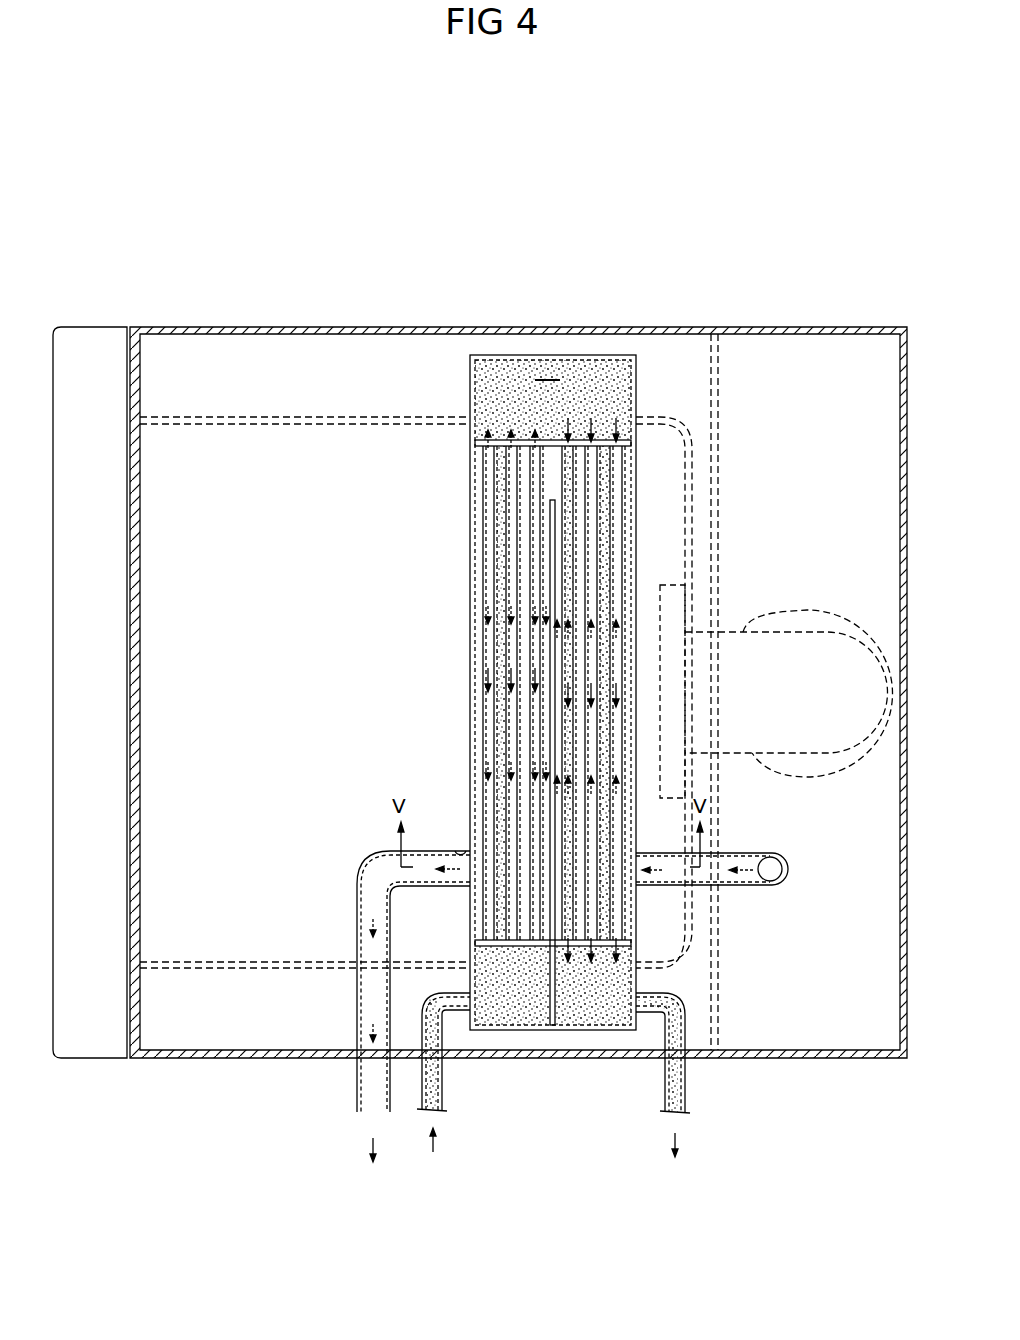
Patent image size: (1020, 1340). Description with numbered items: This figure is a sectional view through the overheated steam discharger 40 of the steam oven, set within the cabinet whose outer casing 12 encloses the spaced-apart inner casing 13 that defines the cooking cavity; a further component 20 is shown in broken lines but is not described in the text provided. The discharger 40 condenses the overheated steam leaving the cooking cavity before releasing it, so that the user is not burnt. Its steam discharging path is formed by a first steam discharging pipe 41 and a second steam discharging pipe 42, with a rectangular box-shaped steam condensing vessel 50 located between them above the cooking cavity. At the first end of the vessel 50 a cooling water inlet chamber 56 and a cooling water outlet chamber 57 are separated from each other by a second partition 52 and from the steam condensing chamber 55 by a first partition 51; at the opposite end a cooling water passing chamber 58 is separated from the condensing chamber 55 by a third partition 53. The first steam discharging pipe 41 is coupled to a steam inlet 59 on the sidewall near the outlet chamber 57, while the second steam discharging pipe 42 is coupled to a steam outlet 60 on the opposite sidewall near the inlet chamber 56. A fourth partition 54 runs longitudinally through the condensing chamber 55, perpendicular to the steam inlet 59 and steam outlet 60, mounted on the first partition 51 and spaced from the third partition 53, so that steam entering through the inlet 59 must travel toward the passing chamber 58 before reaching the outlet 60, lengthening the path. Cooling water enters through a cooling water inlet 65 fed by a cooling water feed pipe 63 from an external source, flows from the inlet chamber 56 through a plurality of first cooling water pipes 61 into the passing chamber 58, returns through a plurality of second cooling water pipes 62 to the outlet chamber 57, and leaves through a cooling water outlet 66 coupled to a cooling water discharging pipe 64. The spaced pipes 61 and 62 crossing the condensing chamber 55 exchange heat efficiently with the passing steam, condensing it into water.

The outer casing 12 is at (403, 327).
The inner casing 13 is at (293, 418).
The compressor 20 is at (743, 632).
The overheated steam discharger 40 is at (425, 680).
The first steam discharging pipe 41 is at (750, 853).
The second steam discharging pipe 42 is at (357, 935).
The steam condensing vessel 50 is at (470, 582).
The first partition 51 is at (520, 940).
The second partition 52 is at (568, 1030).
The third partition 53 is at (548, 446).
The fourth partition 54 is at (552, 640).
The steam condensing chamber 55 is at (497, 515).
The cooling water inlet chamber 56 is at (518, 990).
The cooling water outlet chamber 57 is at (600, 982).
The cooling water passing chamber 58 is at (545, 372).
The steam inlet 59 is at (640, 853).
The steam outlet 60 is at (464, 858).
The first cooling water pipes 61 is at (510, 745).
The second cooling water pipes 62 is at (602, 515).
The cooling water feed pipe 63 is at (445, 1068).
The cooling water discharging pipe 64 is at (688, 1082).
The cooling water inlet 65 is at (490, 1005).
The cooling water outlet 66 is at (618, 1005).